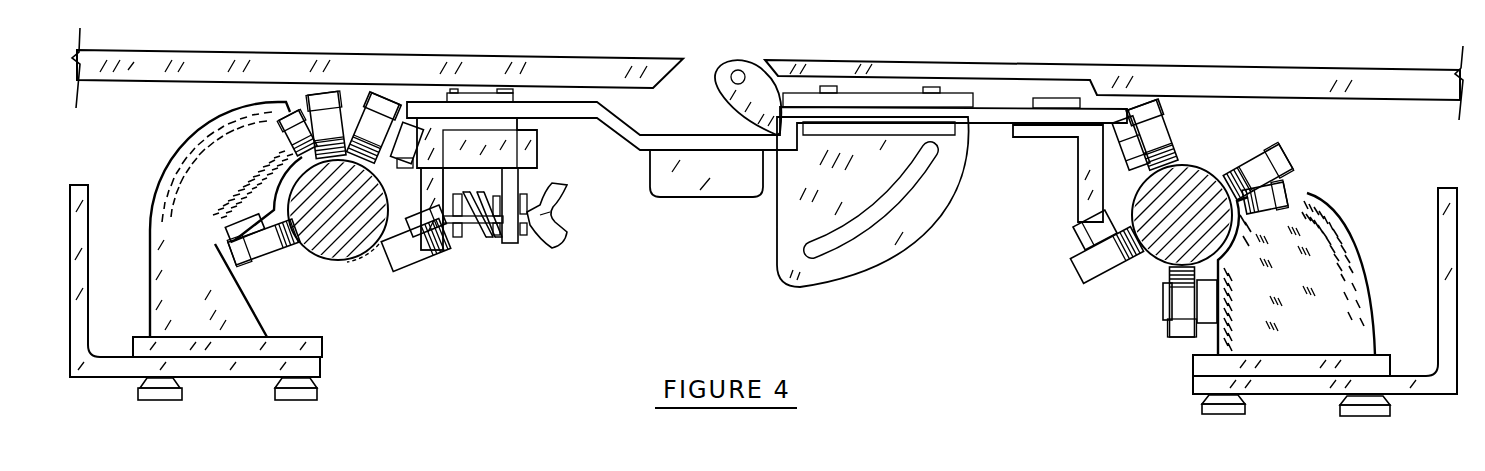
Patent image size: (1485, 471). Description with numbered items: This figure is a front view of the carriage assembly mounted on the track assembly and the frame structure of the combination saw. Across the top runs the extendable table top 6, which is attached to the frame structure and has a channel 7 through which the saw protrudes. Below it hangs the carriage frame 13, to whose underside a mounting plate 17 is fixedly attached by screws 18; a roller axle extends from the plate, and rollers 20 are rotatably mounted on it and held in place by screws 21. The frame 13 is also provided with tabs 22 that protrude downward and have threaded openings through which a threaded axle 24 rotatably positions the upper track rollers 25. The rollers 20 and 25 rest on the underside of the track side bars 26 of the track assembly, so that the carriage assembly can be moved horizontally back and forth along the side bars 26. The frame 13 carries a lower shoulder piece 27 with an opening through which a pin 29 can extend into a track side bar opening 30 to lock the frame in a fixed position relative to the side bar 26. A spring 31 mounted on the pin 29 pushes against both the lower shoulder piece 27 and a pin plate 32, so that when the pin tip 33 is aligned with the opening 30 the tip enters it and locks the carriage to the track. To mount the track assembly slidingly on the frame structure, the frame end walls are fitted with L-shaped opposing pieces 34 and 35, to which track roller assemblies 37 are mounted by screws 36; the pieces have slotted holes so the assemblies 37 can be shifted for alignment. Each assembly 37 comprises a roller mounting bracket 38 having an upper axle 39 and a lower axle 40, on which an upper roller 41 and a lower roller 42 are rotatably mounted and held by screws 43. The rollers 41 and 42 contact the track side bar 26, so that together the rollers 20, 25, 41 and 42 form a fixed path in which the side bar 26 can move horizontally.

The extendable table top 6 is at (1205, 82).
The channel 7 is at (707, 72).
The frame 13 is at (590, 114).
The mounting plate 17 is at (437, 128).
The screws 18 is at (485, 94).
The rollers 20 is at (442, 267).
The screws 21 is at (395, 262).
The tabs 22 is at (398, 128).
The threaded axle 24 is at (366, 100).
The upper track rollers 25 is at (383, 98).
The track side bars 26 is at (306, 208).
The lower shoulder piece 27 is at (516, 182).
The pin 29 is at (558, 222).
The track side bar opening 30 is at (350, 250).
The spring 31 is at (490, 234).
The pin plate 32 is at (455, 232).
The pin tip 33 is at (405, 158).
The L-shaped opposing piece 34 is at (1443, 225).
The L-shaped opposing piece 35 is at (83, 186).
The screws 36 is at (1203, 405).
The track roller assemblies 37 is at (1352, 205).
The roller mounting bracket 38 is at (186, 145).
The upper axle 39 is at (292, 130).
The lower axle 40 is at (232, 225).
The upper roller 41 is at (327, 95).
The lower roller 42 is at (250, 272).
The screws 43 is at (282, 272).